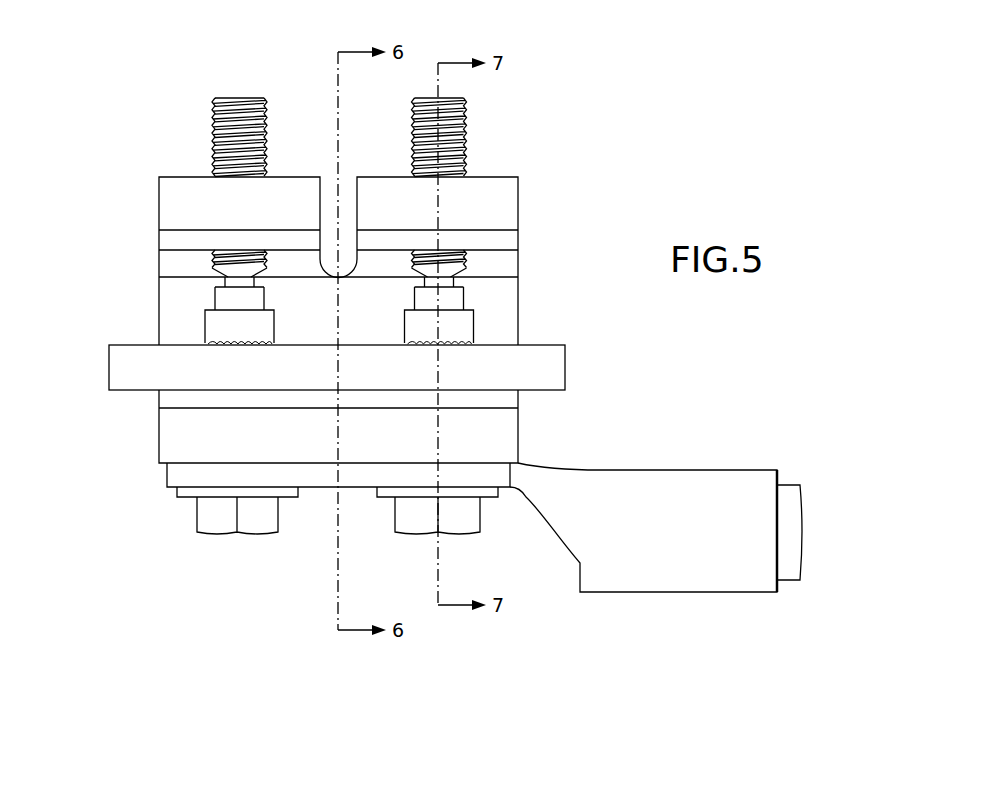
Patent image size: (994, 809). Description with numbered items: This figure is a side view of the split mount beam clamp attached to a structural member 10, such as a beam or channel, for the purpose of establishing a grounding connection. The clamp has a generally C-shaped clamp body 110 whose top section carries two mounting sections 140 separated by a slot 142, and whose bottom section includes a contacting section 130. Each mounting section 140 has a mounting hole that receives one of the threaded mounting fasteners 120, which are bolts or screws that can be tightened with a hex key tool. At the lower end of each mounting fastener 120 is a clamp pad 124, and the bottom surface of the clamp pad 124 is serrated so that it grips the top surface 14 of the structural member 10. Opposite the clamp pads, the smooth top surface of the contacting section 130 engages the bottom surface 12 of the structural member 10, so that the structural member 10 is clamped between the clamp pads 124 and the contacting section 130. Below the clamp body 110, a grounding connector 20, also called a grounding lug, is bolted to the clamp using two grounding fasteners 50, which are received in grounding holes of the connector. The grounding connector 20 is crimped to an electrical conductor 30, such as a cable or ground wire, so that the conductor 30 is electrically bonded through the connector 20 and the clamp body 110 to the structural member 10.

The structural member 10 is at (565, 370).
The bottom surface 12 is at (537, 392).
The top surface 14 is at (540, 345).
The grounding connector 20 is at (687, 470).
The electrical conductor 30 is at (787, 485).
The grounding fastener 50 is at (203, 517).
The clamp body 110 is at (159, 266).
The mounting fastener 120 is at (212, 118).
The clamp pad 124 is at (207, 328).
The contacting section 130 is at (159, 428).
The mounting section 140 is at (159, 195).
The slot 142 is at (317, 152).